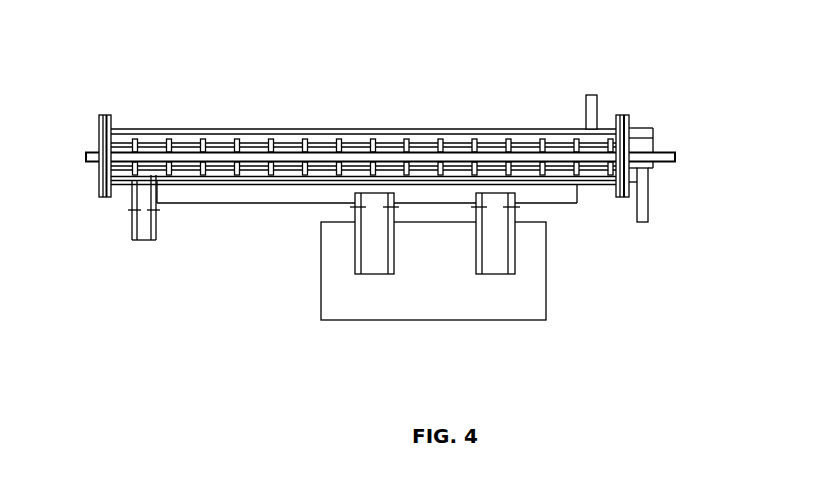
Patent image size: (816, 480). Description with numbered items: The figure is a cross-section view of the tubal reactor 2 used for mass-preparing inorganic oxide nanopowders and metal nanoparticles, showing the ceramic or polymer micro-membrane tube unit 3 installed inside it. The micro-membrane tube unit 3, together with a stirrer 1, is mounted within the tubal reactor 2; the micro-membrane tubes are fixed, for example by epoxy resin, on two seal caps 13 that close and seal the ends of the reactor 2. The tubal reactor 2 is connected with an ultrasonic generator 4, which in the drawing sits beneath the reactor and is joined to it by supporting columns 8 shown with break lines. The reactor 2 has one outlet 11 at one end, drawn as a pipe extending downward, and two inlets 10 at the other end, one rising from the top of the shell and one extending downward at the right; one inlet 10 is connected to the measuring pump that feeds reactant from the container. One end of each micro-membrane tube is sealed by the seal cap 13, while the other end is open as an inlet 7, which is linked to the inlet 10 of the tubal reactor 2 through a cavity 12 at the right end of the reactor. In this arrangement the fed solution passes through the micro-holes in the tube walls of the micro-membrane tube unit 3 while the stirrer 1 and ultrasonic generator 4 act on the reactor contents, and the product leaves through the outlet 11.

The stirrer 1 is at (668, 158).
The tubal reactor 2 is at (154, 127).
The micro-membrane tube unit 3 is at (249, 146).
The ultrasonic generator 4 is at (461, 322).
The inlet 7 is at (633, 146).
The connecting rods 8 is at (406, 144).
The inlet 10 is at (590, 93).
The outlet 11 is at (137, 257).
The cavity 12 is at (650, 172).
The seal cap 13 is at (101, 193).